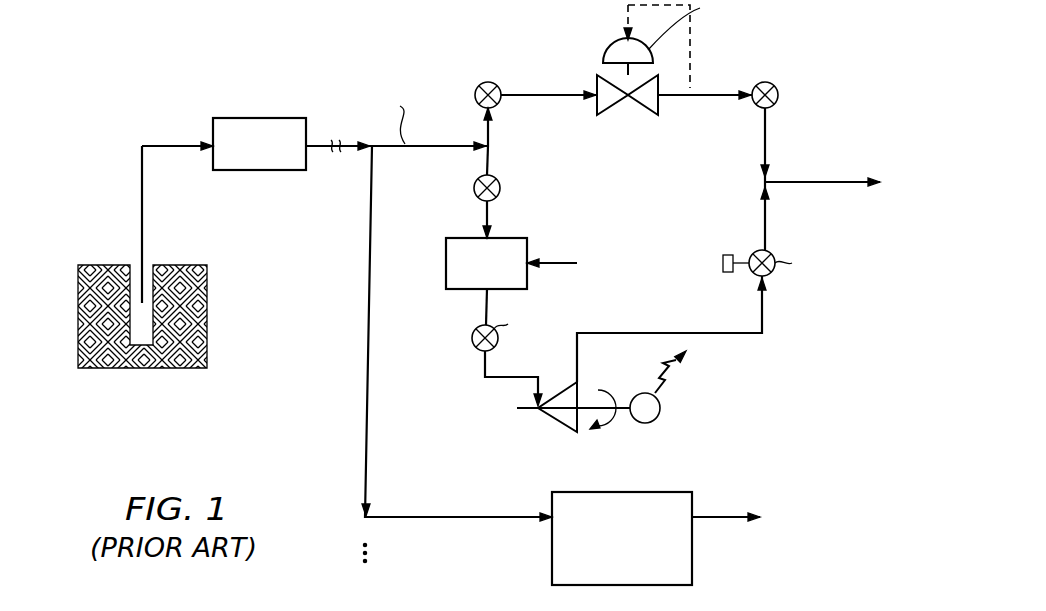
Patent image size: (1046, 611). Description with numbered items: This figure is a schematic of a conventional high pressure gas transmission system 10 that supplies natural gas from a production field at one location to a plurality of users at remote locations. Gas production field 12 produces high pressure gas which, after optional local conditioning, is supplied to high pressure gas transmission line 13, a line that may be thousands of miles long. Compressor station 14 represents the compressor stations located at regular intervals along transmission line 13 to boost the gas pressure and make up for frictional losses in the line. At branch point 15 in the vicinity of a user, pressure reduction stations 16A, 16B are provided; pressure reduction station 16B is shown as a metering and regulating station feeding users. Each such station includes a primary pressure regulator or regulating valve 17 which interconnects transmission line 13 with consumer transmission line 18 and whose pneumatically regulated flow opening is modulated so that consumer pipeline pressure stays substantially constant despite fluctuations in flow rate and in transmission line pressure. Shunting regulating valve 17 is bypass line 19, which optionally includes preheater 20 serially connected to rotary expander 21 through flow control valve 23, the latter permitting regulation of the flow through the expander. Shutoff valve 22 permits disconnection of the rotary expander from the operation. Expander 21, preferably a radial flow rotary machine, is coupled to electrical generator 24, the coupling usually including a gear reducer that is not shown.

The high pressure gas transmission system 10 is at (318, 192).
The gas production field 12 is at (166, 264).
The high pressure gas transmission line 13 is at (167, 144).
The compressor station 14 is at (254, 118).
The branch point 15 is at (370, 147).
The pressure reduction station 16A is at (797, 336).
The pressure reduction station 16B is at (724, 485).
The primary pressure regulator or regulating valve 17 is at (649, 116).
The consumer transmission line 18 is at (836, 185).
The bypass line 19 is at (521, 363).
The preheater 20 is at (452, 277).
The rotary expander 21 is at (548, 420).
The shutoff valve 22 is at (500, 184).
The flow control valve 23 is at (477, 345).
The electrical generator 24 is at (652, 422).